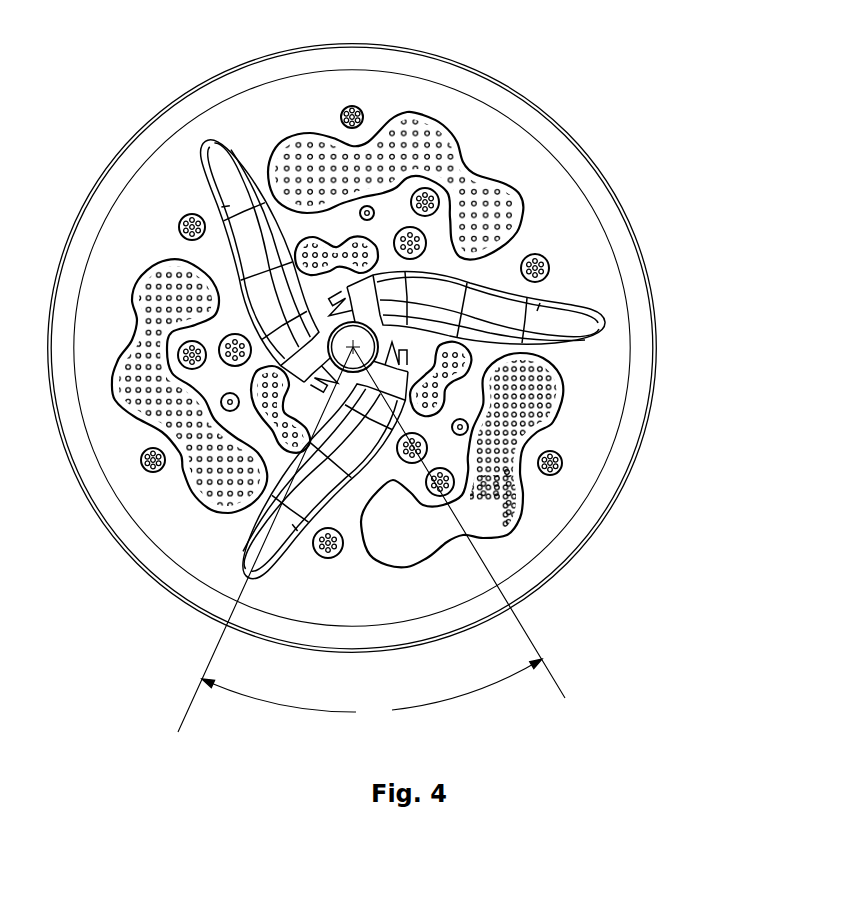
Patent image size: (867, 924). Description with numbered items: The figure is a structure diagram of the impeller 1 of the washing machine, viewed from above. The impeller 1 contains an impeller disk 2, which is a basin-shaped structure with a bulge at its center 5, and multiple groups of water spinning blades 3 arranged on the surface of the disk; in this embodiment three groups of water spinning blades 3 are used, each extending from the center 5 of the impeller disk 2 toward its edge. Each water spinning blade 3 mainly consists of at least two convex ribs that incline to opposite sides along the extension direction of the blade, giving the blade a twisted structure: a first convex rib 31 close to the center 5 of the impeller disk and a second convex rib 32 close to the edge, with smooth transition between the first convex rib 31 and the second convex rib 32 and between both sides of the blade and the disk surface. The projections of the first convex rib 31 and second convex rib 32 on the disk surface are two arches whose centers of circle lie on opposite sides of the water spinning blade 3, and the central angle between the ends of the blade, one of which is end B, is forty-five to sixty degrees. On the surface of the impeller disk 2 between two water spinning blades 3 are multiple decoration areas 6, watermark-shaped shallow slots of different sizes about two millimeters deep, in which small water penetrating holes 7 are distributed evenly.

The impeller 1 is at (545, 103).
The impeller disk 2 is at (163, 192).
The water spinning blade 3 is at (550, 308).
The center of the impeller disk 5 is at (372, 329).
The decoration area 6 is at (537, 512).
The small water penetrating hole 7 is at (509, 473).
The first convex rib 31 is at (347, 430).
The second convex rib 32 is at (282, 528).
The end B of the water spinning blade B is at (258, 600).